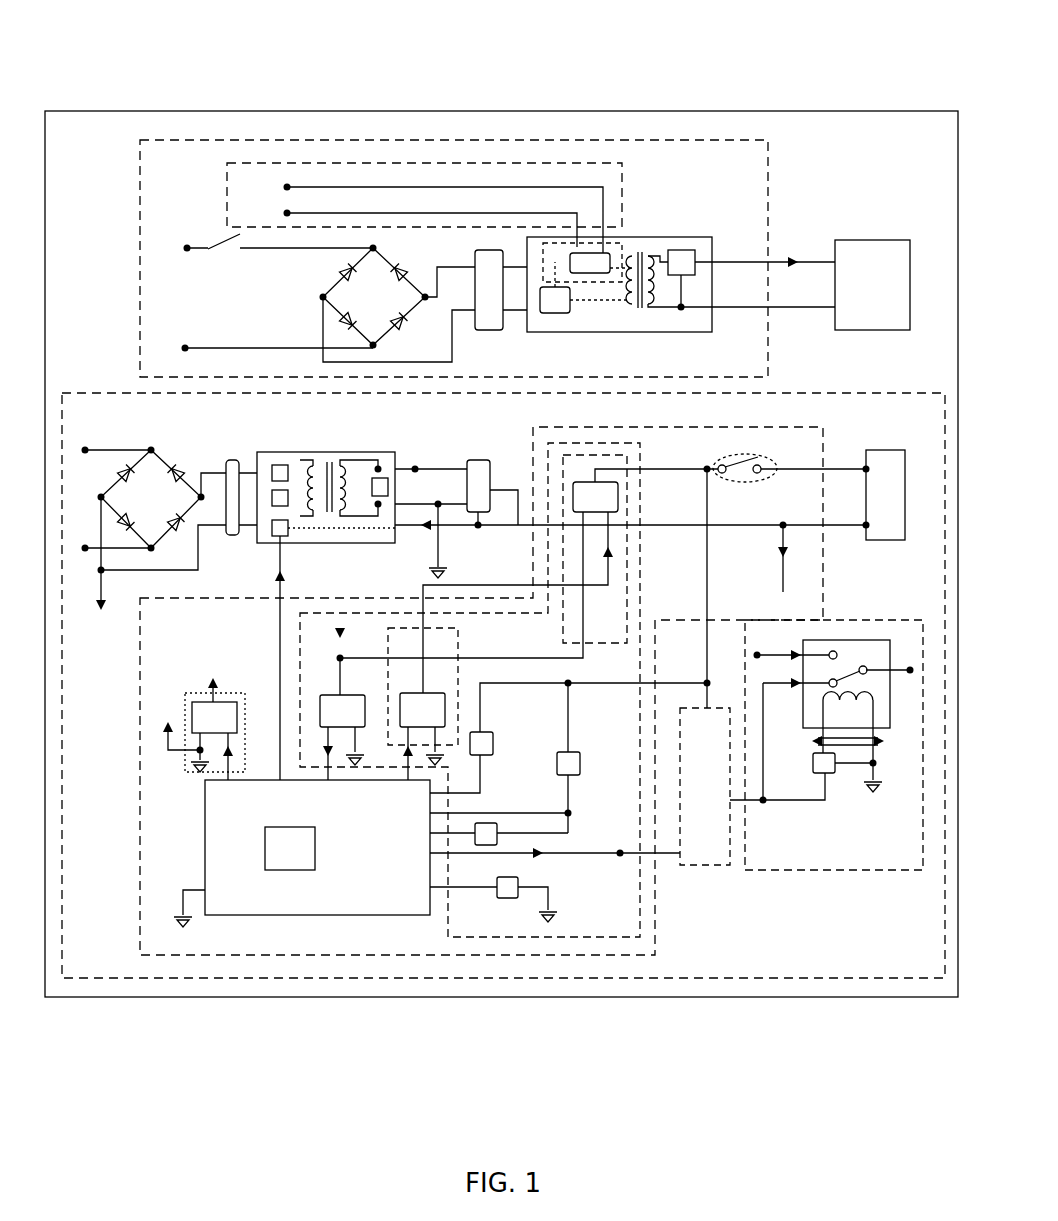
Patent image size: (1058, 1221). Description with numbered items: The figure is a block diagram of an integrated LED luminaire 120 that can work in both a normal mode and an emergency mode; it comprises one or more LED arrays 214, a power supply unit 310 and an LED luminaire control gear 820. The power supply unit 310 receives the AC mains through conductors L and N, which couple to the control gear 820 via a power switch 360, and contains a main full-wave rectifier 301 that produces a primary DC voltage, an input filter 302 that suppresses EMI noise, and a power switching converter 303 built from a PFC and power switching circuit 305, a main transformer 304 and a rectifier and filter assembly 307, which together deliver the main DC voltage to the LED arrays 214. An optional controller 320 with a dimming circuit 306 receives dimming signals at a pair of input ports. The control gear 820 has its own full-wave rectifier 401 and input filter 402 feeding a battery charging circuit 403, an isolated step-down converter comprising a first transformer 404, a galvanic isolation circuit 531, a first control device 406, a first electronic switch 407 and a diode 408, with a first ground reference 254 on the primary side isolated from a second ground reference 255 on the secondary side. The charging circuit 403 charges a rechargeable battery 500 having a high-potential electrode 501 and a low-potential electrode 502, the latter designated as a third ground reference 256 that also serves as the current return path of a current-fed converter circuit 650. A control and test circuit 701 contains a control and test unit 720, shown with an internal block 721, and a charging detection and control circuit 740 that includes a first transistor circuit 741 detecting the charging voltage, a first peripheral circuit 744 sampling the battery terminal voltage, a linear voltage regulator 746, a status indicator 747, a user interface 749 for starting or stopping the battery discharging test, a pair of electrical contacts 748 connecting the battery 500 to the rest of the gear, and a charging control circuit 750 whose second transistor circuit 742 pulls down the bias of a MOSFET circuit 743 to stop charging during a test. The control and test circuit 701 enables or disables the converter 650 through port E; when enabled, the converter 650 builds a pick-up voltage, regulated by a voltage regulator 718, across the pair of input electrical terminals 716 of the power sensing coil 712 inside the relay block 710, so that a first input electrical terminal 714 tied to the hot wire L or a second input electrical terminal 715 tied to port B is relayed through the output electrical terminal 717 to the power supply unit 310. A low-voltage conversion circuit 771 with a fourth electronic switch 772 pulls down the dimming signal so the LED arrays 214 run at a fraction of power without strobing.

The integrated LED luminaire 120 is at (497, 108).
The power supply unit 310 is at (590, 138).
The controller 320 is at (244, 163).
The power switch 360 is at (212, 243).
The main full-wave rectifier 301 is at (362, 243).
The input filter 302 is at (487, 250).
The rectifier and filter assembly 307 is at (688, 236).
The main transformer 304 is at (640, 262).
The PFC and power switching circuit 305 is at (550, 314).
The dimming circuit 306 is at (600, 274).
The power switching converter 303 is at (714, 233).
The LED arrays 214 is at (876, 240).
The LED luminaire control gear 820 is at (905, 980).
The full-wave rectifier 401 is at (150, 444).
The first ground reference 254 is at (101, 610).
The input filter 402 is at (226, 466).
The first electronic switch 407 is at (238, 530).
The battery charging circuit 403 is at (325, 450).
The diode 408 is at (280, 464).
The first control device 406 is at (281, 540).
The first transformer 404 is at (372, 478).
The galvanic isolation circuit 531 is at (479, 459).
The second ground reference 255 is at (450, 572).
The MOSFET circuit 743 is at (628, 498).
The charging control circuit 750 is at (632, 558).
The pair of electrical contacts 748 is at (750, 461).
The rechargeable battery 500 is at (886, 542).
The high-potential electrode 501 is at (877, 452).
The low-potential electrode 502 is at (871, 542).
The control and test circuit 701 is at (656, 957).
The charging detection and control circuit 740 is at (562, 940).
The control and test unit 720 is at (300, 915).
The memory 721 is at (283, 870).
The low-voltage conversion circuit 771 is at (205, 700).
The fourth electronic switch 772 is at (186, 745).
The first transistor circuit 741 is at (320, 710).
The second transistor circuit 742 is at (400, 715).
The first peripheral circuit 744 is at (494, 742).
The linear voltage regulator 746 is at (581, 765).
The status indicator 747 is at (485, 846).
The user interface 749 is at (507, 899).
The current-fed converter circuit 650 is at (718, 868).
The relay module 710 is at (893, 690).
The first input electrical terminal 714 is at (835, 640).
The second input electrical terminal 715 is at (831, 686).
The output electrical terminal 717 is at (885, 648).
The power sensing coil 712 is at (851, 748).
The pair of input electrical terminals 716 is at (840, 766).
The voltage regulator 718 is at (823, 775).
The third ground reference 256 is at (158, 1030).